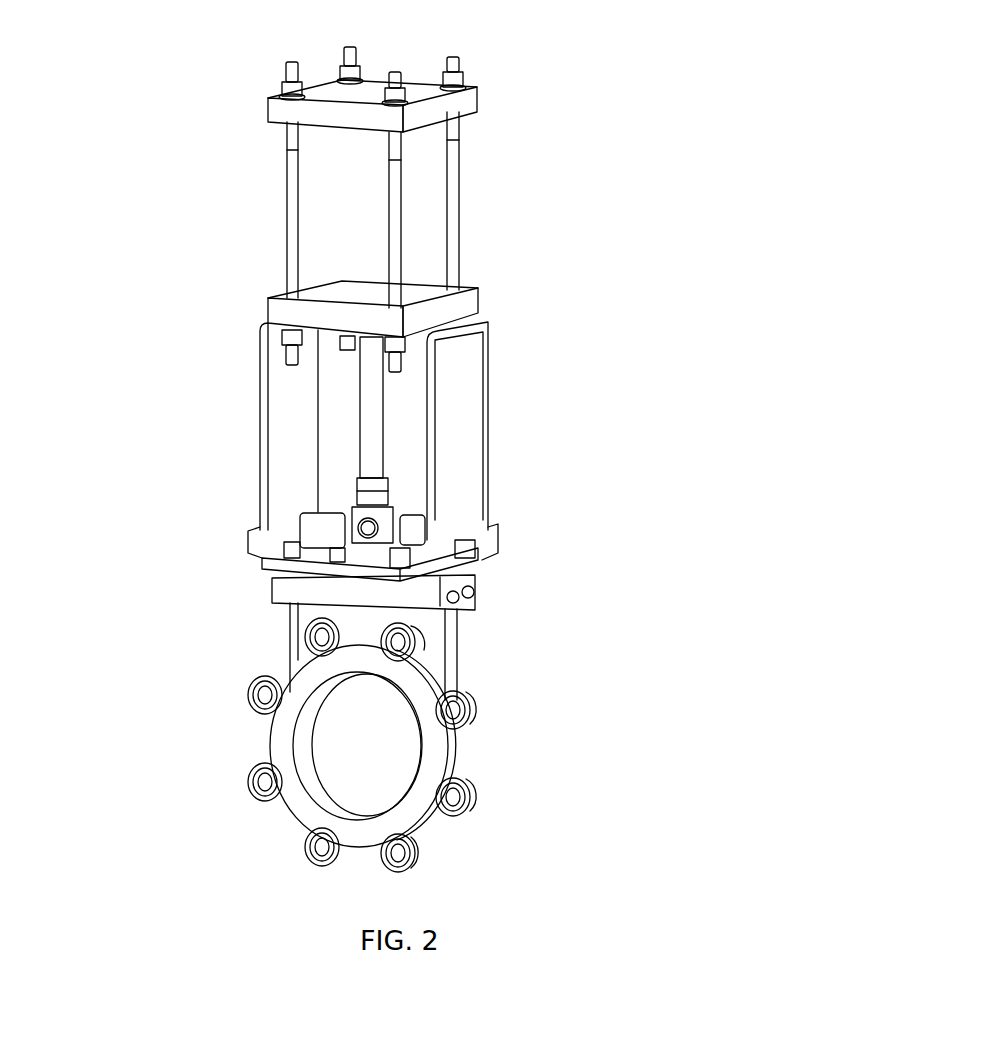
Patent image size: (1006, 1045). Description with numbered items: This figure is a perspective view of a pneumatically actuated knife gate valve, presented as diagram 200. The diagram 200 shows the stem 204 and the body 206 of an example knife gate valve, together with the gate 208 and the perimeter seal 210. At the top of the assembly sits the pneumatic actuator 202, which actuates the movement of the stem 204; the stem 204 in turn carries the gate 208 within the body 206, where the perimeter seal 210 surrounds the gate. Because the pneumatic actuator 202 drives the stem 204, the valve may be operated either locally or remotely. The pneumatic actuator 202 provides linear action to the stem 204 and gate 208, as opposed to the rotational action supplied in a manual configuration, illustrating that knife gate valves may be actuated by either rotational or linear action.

The diagram 200 is at (852, 78).
The pneumatic actuator 202 is at (322, 197).
The stem 204 is at (357, 416).
The body 206 is at (287, 635).
The gate 208 is at (357, 737).
The perimeter seal 210 is at (325, 802).